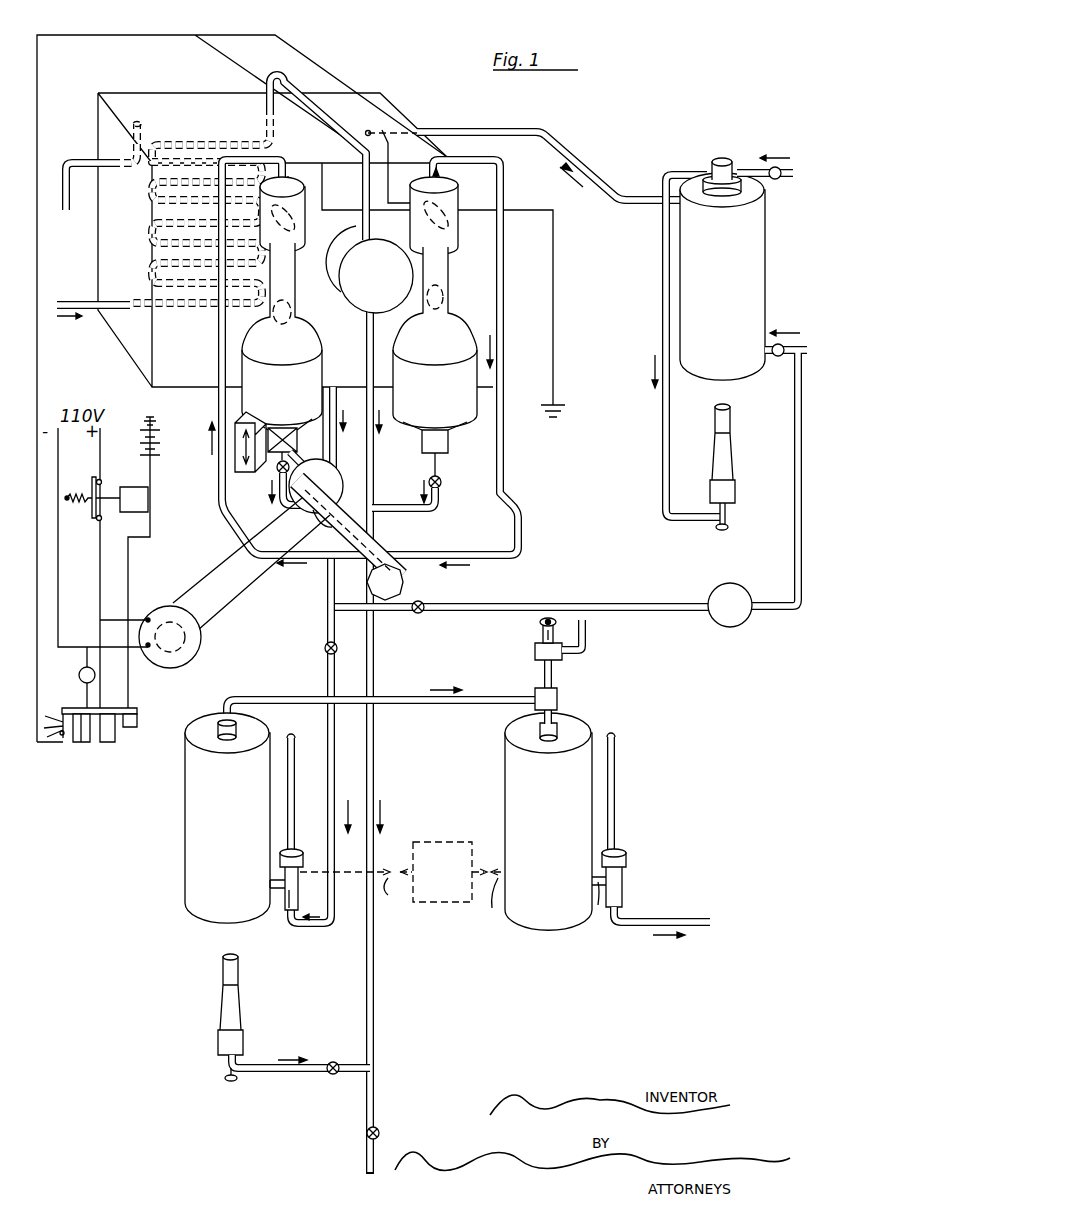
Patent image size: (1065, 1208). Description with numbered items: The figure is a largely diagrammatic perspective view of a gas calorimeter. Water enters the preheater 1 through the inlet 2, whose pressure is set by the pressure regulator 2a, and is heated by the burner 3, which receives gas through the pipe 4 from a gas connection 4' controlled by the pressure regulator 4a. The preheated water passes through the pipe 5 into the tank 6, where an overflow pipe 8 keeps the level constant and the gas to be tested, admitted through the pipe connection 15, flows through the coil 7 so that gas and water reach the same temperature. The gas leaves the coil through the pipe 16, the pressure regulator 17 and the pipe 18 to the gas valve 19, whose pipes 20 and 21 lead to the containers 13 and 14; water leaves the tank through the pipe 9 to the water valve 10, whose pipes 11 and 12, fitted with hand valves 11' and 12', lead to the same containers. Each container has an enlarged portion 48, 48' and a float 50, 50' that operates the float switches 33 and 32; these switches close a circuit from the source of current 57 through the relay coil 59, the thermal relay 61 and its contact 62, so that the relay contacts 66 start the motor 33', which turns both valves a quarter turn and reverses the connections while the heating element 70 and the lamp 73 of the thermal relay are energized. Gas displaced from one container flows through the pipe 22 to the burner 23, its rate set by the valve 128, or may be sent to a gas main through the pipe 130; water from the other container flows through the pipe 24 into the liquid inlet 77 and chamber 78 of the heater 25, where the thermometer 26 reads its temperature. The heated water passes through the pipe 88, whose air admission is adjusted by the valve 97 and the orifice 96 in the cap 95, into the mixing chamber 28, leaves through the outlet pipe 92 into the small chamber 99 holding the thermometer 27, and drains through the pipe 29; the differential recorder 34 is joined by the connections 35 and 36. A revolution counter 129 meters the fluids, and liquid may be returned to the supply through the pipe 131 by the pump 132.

The water preheater 1 is at (766, 285).
The water inlet 2 is at (760, 372).
The pressure regulator 2a is at (776, 360).
The burner 3 is at (714, 436).
The pipe 4 is at (672, 346).
The inlet pipe 4' is at (765, 154).
The pressure regulator 4a is at (777, 180).
The pipe 5 is at (530, 130).
The tank 6 is at (392, 112).
The coil 7 is at (175, 150).
The overflow pipe 8 is at (84, 160).
The pipe 9 is at (340, 406).
The water valve 10 is at (333, 478).
The pipe 11 is at (275, 486).
The hand operated valve 11' is at (310, 451).
The pipe 12 is at (403, 485).
The hand operated valve 12' is at (453, 477).
The container 13 is at (299, 440).
The container 14 is at (448, 440).
The pipe connection 15 is at (99, 310).
The pipe 16 is at (322, 106).
The pressure regulator 17 is at (369, 269).
The pipe 18 is at (362, 345).
The gas valve 19 is at (378, 547).
The pipe 20 is at (322, 557).
The pipe 21 is at (448, 556).
The pipe 22 is at (374, 748).
The burner 23 is at (212, 975).
The pipe 24 is at (326, 672).
The heating tank 25 is at (185, 838).
The thermometer 26 is at (294, 793).
The thermometer 27 is at (618, 785).
The mixing chamber 28 is at (505, 777).
The pipe 29 is at (680, 920).
The float switch 32 is at (440, 237).
The float switch 33 is at (290, 247).
The motor 33' is at (184, 639).
The differential recording device 34 is at (435, 842).
The connection 35 is at (356, 890).
The connection 36 is at (496, 905).
The enlarged portion 48 is at (282, 336).
The enlarged portion 48' is at (435, 338).
The float 50 is at (306, 316).
The float 50' is at (457, 295).
The source of current 57 is at (160, 452).
The coil 59 is at (148, 500).
The thermal relay 61 is at (108, 705).
The contact 62 is at (60, 740).
The relay contacts 66 is at (104, 482).
The heating element 70 is at (92, 742).
The lamp 73 is at (79, 675).
The liquid inlet 77 is at (280, 874).
The chamber 78 is at (288, 910).
The pipe 88 is at (460, 708).
The outlet pipe 92 is at (598, 908).
The cap 95 is at (540, 628).
The orifice 96 is at (552, 618).
The valve 97 is at (558, 662).
The small chamber 99 is at (626, 882).
The valve 128 is at (224, 1082).
The revolution counter 129 is at (247, 472).
The pipe 130 is at (380, 1108).
The pipe 131 is at (516, 602).
The pump 132 is at (716, 624).